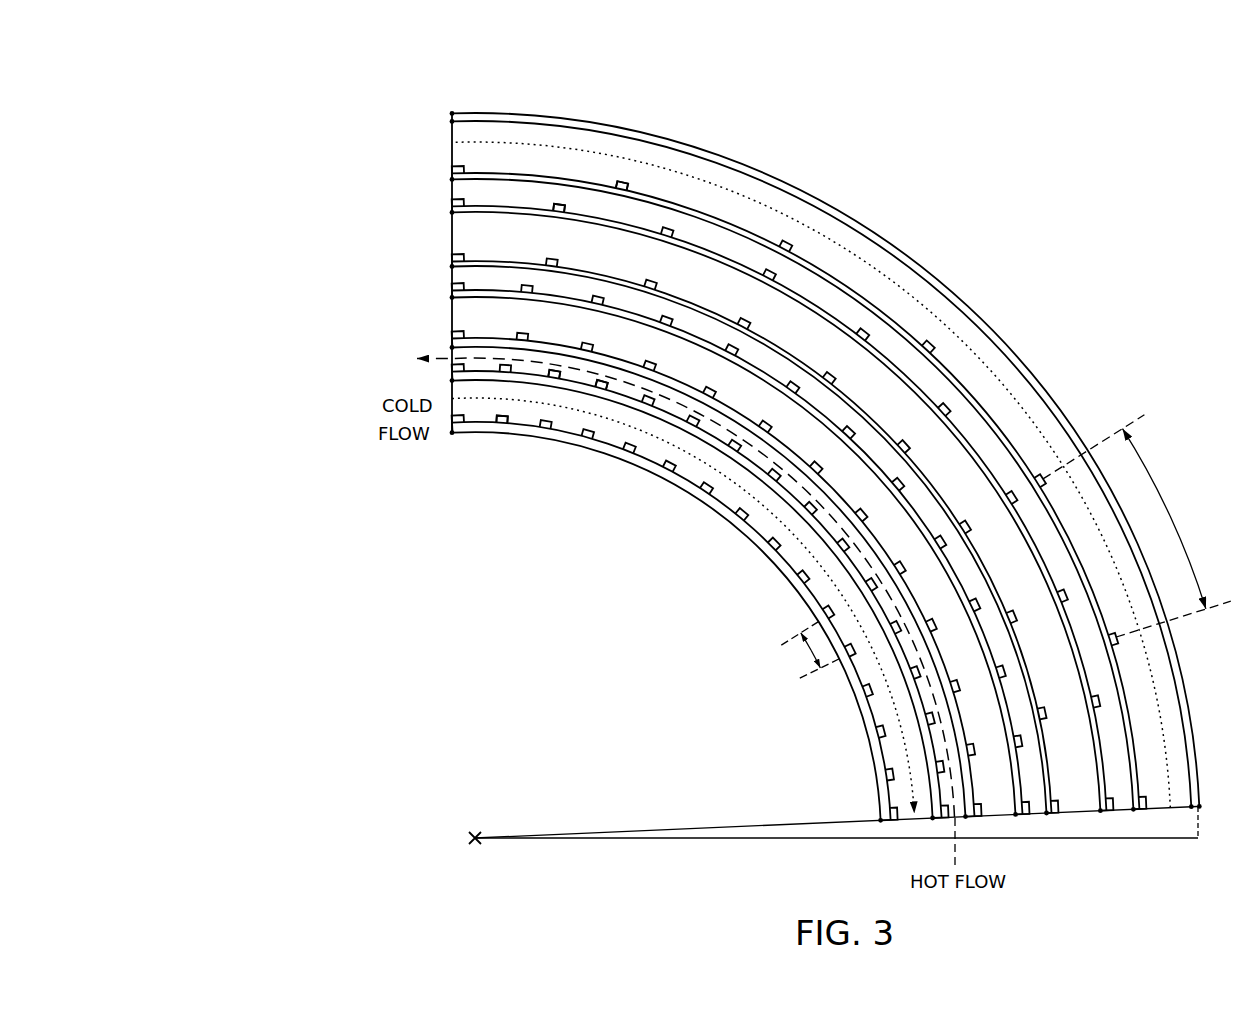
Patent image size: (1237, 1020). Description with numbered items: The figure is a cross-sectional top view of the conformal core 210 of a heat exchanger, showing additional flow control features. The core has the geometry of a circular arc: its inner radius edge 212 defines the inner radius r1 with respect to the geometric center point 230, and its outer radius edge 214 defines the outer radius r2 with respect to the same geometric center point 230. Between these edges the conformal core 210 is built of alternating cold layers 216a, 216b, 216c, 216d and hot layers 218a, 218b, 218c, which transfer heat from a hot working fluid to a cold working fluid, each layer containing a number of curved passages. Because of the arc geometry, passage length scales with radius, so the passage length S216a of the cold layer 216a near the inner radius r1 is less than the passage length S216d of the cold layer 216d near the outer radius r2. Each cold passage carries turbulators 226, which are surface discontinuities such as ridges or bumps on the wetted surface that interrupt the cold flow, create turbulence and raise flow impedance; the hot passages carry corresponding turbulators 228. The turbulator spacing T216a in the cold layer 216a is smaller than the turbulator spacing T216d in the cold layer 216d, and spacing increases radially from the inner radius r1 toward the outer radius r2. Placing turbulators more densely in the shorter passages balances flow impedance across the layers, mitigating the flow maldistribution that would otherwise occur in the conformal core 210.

The conformal core 210 is at (316, 132).
The inner radius edge 212 is at (766, 557).
The outer radius edge 214 is at (1030, 356).
The cold layer 216a is at (445, 397).
The cold layer 216b is at (461, 315).
The cold layer 216c is at (457, 232).
The cold layer 216d is at (450, 125).
The hot layer 218a is at (452, 353).
The hot layer 218b is at (459, 275).
The hot layer 218c is at (457, 188).
The turbulators 226 is at (455, 171).
The turbulators 228 is at (562, 203).
The geometric center point 230 is at (473, 830).
The passage length S216a is at (741, 485).
The passage length S216d is at (900, 280).
The turbulator spacing T216a is at (810, 650).
The turbulator spacing T216d is at (1138, 526).
The inner radius r1 is at (703, 796).
The outer radius r2 is at (836, 841).